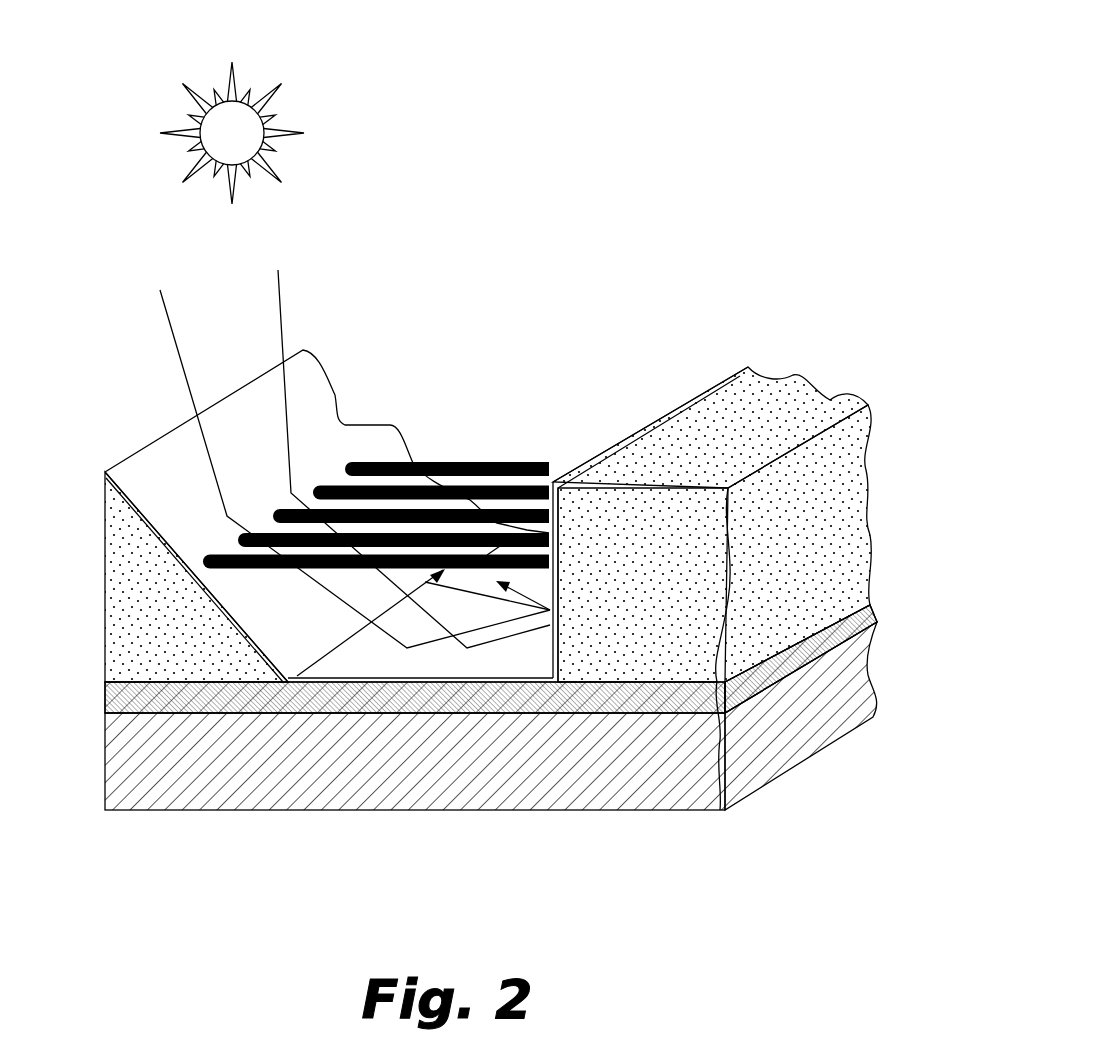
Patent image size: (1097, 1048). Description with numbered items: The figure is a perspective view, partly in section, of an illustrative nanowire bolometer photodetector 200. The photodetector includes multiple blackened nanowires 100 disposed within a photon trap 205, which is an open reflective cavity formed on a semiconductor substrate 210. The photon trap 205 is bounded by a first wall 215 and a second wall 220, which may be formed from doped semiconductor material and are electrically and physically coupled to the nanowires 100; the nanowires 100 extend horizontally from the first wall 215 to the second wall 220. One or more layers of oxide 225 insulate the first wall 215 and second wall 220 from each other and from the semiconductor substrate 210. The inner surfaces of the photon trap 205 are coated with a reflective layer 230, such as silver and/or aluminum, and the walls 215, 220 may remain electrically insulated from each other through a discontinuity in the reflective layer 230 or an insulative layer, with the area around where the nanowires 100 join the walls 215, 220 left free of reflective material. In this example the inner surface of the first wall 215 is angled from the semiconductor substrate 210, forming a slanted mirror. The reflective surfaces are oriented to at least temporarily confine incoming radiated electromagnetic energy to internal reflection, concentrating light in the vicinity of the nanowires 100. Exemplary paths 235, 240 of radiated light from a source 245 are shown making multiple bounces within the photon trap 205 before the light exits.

The photodetector 200 is at (695, 79).
The blackened nanowires 100 is at (442, 462).
The photon trap 205 is at (506, 372).
The semiconductor substrate 210 is at (92, 717).
The first wall 215 is at (105, 582).
The second wall 220 is at (773, 400).
The layers of oxide 225 is at (92, 682).
The reflective layer 230 is at (146, 476).
The path of radiated light 235 is at (166, 309).
The path of radiated light 240 is at (283, 290).
The source 245 is at (232, 133).